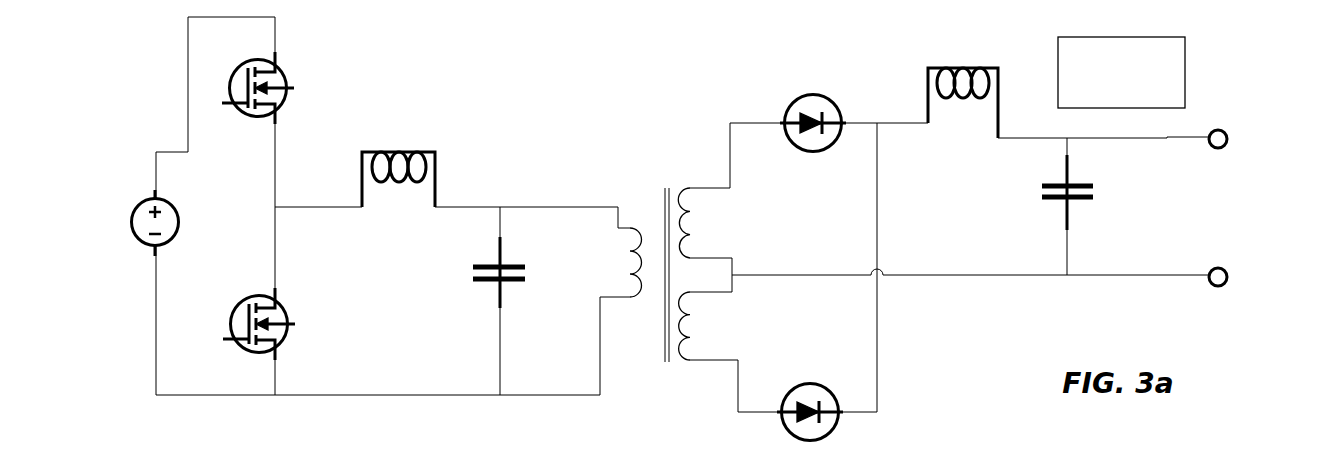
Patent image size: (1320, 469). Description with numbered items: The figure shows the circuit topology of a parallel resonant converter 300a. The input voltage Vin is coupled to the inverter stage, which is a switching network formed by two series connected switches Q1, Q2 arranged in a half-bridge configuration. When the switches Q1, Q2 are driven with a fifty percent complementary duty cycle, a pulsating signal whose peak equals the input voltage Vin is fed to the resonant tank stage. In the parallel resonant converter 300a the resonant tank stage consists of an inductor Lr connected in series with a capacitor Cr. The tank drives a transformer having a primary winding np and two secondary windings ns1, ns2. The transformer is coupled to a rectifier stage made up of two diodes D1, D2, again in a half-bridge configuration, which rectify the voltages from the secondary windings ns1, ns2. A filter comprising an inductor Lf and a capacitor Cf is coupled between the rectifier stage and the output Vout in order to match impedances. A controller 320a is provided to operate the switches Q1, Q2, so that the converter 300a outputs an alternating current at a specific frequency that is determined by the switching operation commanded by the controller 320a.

The parallel resonant converter 300a is at (424, 84).
The input voltage Vin is at (138, 223).
The switch Q1 is at (258, 77).
The switch Q2 is at (259, 314).
The inductor Lr is at (398, 164).
The capacitor Cr is at (515, 272).
The primary winding np is at (630, 291).
The secondary winding ns1 is at (708, 199).
The secondary winding ns2 is at (731, 343).
The diode D1 is at (813, 137).
The diode D2 is at (810, 426).
The inductor Lf is at (963, 88).
The capacitor Cf is at (1083, 192).
The controller 320a is at (1099, 95).
The output Vout is at (1236, 208).